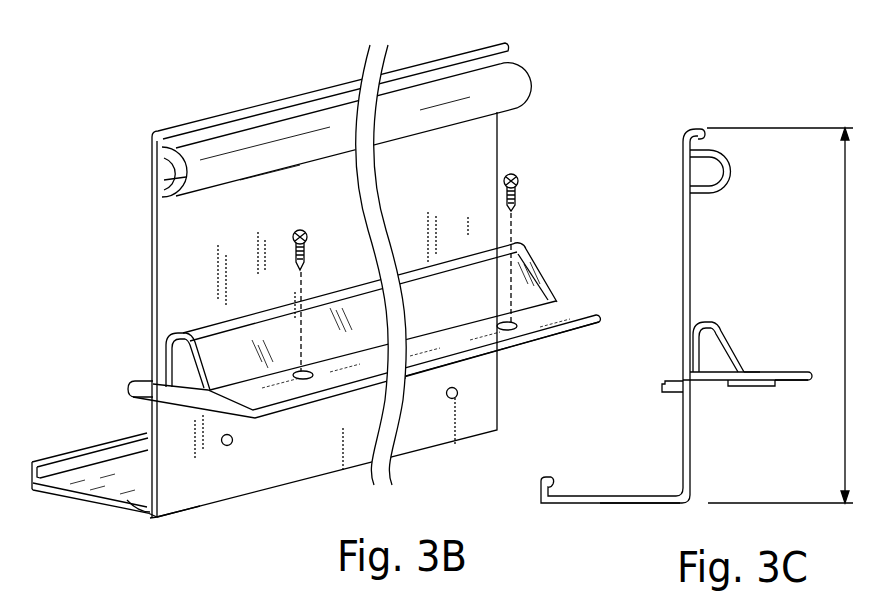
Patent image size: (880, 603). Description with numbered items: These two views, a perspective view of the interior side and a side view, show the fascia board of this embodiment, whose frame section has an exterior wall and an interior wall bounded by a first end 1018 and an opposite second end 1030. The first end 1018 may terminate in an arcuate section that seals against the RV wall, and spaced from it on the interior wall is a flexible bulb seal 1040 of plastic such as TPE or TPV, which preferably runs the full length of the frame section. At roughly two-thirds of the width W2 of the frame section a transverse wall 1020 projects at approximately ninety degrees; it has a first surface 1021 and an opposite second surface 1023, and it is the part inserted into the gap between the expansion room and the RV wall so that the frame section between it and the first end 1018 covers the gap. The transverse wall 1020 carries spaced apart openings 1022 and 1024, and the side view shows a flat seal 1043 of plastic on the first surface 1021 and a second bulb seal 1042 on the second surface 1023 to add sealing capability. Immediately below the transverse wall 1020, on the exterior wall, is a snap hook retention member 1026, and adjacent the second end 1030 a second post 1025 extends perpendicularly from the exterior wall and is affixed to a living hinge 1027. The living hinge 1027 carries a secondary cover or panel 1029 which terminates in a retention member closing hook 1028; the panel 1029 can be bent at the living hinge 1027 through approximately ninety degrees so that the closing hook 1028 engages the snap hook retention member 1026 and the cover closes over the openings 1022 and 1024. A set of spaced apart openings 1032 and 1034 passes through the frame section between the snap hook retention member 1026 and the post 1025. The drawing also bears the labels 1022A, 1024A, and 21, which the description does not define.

In FIG. 3B, the first end 1018 is at (216, 100).
In FIG. 3C, the first end 1018 is at (692, 118).
In FIG. 3B, the flexible bulb seal 1040 is at (520, 74).
In FIG. 3C, the flexible bulb seal 1040 is at (722, 152).
In FIG. 3B, the second end 1030 is at (421, 484).
In FIG. 3C, the second end 1030 is at (662, 525).
In FIG. 3B, the second bulb seal 1042 is at (530, 250).
In FIG. 3C, the second bulb seal 1042 is at (710, 321).
In FIG. 3B, the second surface 1023 is at (561, 300).
In FIG. 3C, the second surface 1023 is at (765, 360).
In FIG. 3B, the transverse wall 1020 is at (578, 311).
In FIG. 3C, the transverse wall 1020 is at (795, 371).
In FIG. 3B, the plate edge 21 is at (560, 345).
In FIG. 3B, the opening 1024 is at (518, 318).
In FIG. 3B, the screw 1024A is at (513, 175).
In FIG. 3B, the opening 1022 is at (316, 375).
In FIG. 3B, the screw 1022A is at (297, 230).
In FIG. 3B, the opening 1034 is at (234, 455).
In FIG. 3B, the opening 1032 is at (455, 405).
In FIG. 3B, the snap hook retention member 1026 is at (131, 382).
In FIG. 3C, the snap hook retention member 1026 is at (661, 383).
In FIG. 3B, the retention member closing hook 1028 is at (102, 443).
In FIG. 3C, the retention member closing hook 1028 is at (548, 476).
In FIG. 3B, the secondary cover or panel 1029 is at (67, 500).
In FIG. 3C, the secondary cover or panel 1029 is at (566, 505).
In FIG. 3B, the living hinge 1027 is at (136, 510).
In FIG. 3C, the living hinge 1027 is at (668, 498).
In FIG. 3B, the second post 1025 is at (155, 518).
In FIG. 3C, the second post 1025 is at (693, 505).
In FIG. 3C, the flat seal 1043 is at (742, 388).
In FIG. 3C, the first surface 1021 is at (794, 388).
In FIG. 3C, the width W2 is at (782, 315).